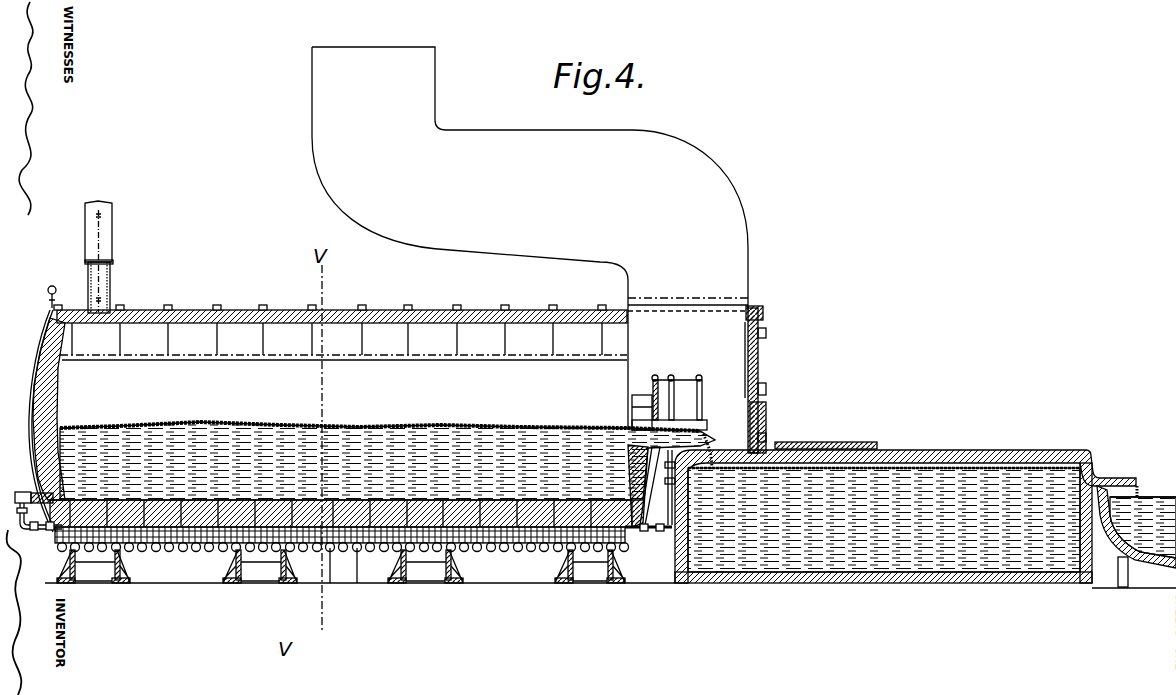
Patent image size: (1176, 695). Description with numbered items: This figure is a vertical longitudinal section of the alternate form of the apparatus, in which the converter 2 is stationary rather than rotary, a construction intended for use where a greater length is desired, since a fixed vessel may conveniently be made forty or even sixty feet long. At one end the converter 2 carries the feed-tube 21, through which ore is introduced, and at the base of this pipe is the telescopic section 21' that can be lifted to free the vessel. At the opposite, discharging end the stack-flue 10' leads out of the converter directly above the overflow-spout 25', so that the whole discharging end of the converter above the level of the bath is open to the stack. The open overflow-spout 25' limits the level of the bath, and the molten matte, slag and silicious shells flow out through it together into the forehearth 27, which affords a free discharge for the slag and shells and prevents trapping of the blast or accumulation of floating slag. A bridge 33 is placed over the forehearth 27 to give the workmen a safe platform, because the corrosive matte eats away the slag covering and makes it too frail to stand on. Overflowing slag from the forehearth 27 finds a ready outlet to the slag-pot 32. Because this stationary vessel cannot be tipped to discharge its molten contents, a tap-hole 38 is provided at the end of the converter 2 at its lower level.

The converter 2 is at (372, 434).
The stack-flue 10' is at (539, 250).
The feed-tube 21 is at (116, 256).
The telescopic section 21' is at (116, 286).
The overflow-spout 25' is at (687, 422).
The forehearth 27 is at (940, 467).
The slag-pot 32 is at (1158, 492).
The bridge 33 is at (836, 445).
The tap-hole 38 is at (34, 494).